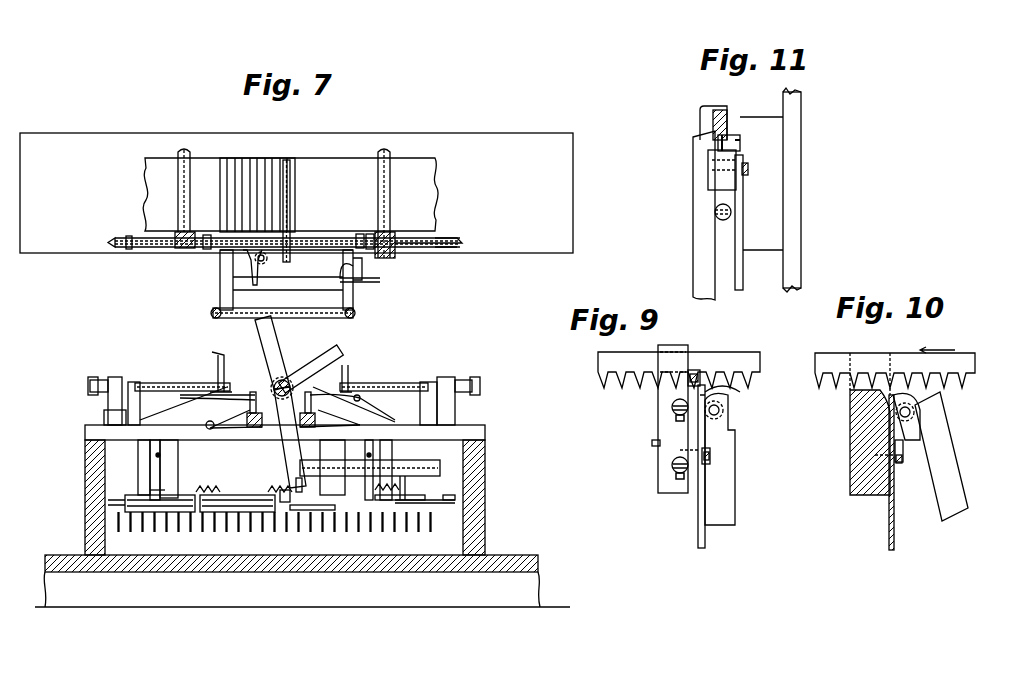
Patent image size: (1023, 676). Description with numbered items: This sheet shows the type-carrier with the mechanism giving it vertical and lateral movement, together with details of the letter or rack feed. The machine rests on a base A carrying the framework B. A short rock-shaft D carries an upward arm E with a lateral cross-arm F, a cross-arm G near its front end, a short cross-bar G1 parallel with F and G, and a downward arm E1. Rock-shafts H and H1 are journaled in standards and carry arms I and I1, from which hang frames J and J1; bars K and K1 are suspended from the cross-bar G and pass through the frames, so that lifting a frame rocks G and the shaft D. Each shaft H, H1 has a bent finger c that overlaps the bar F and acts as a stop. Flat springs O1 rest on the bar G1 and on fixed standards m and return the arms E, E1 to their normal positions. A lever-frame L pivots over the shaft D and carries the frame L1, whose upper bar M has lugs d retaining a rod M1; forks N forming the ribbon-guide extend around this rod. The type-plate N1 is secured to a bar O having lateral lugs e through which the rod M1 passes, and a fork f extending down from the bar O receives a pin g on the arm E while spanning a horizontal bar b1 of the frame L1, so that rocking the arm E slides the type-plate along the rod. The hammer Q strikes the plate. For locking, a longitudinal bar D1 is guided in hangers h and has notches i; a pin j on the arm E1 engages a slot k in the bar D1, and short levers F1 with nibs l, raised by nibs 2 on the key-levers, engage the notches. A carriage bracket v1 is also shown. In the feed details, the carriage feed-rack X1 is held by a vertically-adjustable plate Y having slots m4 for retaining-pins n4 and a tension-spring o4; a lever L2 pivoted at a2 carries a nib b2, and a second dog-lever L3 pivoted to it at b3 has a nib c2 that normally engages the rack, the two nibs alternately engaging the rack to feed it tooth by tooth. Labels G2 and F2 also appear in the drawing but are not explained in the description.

In FIG. 7, the forks forming the ribbon-guide N is at (188, 158).
In FIG. 7, the type-plate N1 is at (250, 180).
In FIG. 7, the hammer Q is at (288, 162).
In FIG. 7, the carriage G2 is at (290, 194).
In FIG. 7, the longitudinal bar O is at (137, 238).
In FIG. 7, the horizontal rod M1 is at (447, 240).
In FIG. 7, the lateral lugs e is at (129, 250).
In FIG. 7, the lugs d is at (205, 252).
In FIG. 7, the frame for supporting the type-plate and ribbon-guide L1 is at (222, 280).
In FIG. 7, the upper horizontal bar M is at (355, 282).
In FIG. 7, the bracket v1 is at (382, 280).
In FIG. 7, the horizontal bar b1 is at (296, 279).
In FIG. 7, the fork or yoke f is at (250, 260).
In FIG. 7, the pin g is at (268, 262).
In FIG. 7, the lever-frame L is at (211, 315).
In FIG. 7, the arm E is at (262, 332).
In FIG. 7, the arm E1 is at (290, 452).
In FIG. 7, the cross-arm F is at (312, 346).
In FIG. 7, the short rock-shaft D is at (288, 384).
In FIG. 7, the rock-shaft H is at (178, 384).
In FIG. 7, the rock-shaft H1 is at (383, 384).
In FIG. 7, the bent finger c is at (212, 352).
In FIG. 7, the arms I is at (130, 383).
In FIG. 7, the arms I1 is at (432, 378).
In FIG. 7, the flat springs O1 is at (267, 404).
In FIG. 7, the cross-arm G is at (245, 418).
In FIG. 7, the short cross-bar G1 is at (281, 397).
In FIG. 7, the fixed standards m is at (287, 393).
In FIG. 7, the framework B is at (108, 406).
In FIG. 7, the vertically-suspended frame J is at (138, 455).
In FIG. 7, the hangers h is at (160, 455).
In FIG. 7, the bar K is at (200, 452).
In FIG. 7, the longitudinal bar D1 is at (191, 482).
In FIG. 7, the bar K1 is at (352, 465).
In FIG. 7, the vertically-suspended frame J1 is at (396, 452).
In FIG. 7, the notches or teeth i is at (297, 485).
In FIG. 7, the vertical recess or slot k is at (301, 478).
In FIG. 7, the lateral pin j is at (288, 501).
In FIG. 7, the short levers F1 is at (350, 530).
In FIG. 7, the nib l is at (400, 504).
In FIG. 7, the plate F2 is at (425, 492).
In FIG. 7, the nibs 2 is at (375, 523).
In FIG. 7, the base or table A is at (302, 571).
In FIG. 11, the lever L2 is at (706, 215).
In FIG. 9, the lever L2 is at (699, 530).
In FIG. 10, the lever L2 is at (876, 472).
In FIG. 11, the vertically-adjustable plate Y is at (703, 106).
In FIG. 9, the vertically-adjustable plate Y is at (662, 430).
In FIG. 11, the carriage feed-rack X1 is at (725, 112).
In FIG. 9, the carriage feed-rack X1 is at (669, 367).
In FIG. 10, the carriage feed-rack X1 is at (905, 371).
In FIG. 11, the dog or nib b2 is at (697, 138).
In FIG. 9, the dog or nib b2 is at (722, 390).
In FIG. 11, the nib c2 is at (736, 136).
In FIG. 9, the nib c2 is at (730, 350).
In FIG. 10, the nib c2 is at (852, 405).
In FIG. 11, the second dog-lever L3 is at (744, 280).
In FIG. 9, the second dog-lever L3 is at (722, 505).
In FIG. 10, the second dog-lever L3 is at (930, 456).
In FIG. 11, the pivot b3 is at (748, 170).
In FIG. 9, the pivot b3 is at (725, 411).
In FIG. 10, the pivot b3 is at (916, 412).
In FIG. 11, the pivot a2 is at (715, 212).
In FIG. 9, the pivot a2 is at (712, 456).
In FIG. 10, the pivot a2 is at (899, 462).
In FIG. 9, the retaining-pins n4 is at (672, 465).
In FIG. 9, the vertical slots m4 is at (672, 478).
In FIG. 9, the tension-spring o4 is at (652, 443).